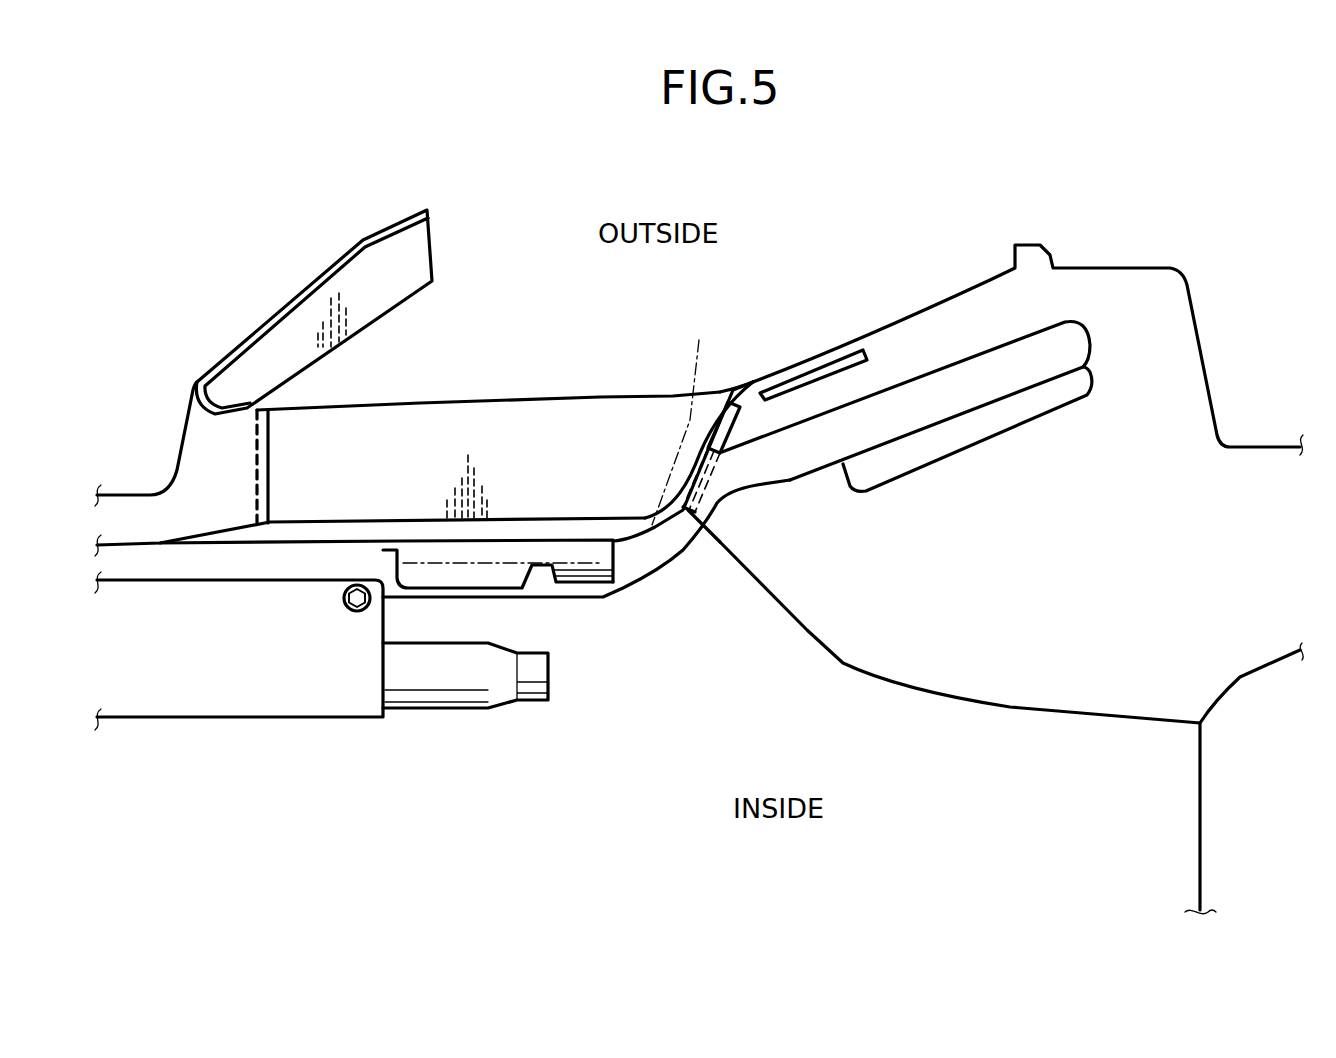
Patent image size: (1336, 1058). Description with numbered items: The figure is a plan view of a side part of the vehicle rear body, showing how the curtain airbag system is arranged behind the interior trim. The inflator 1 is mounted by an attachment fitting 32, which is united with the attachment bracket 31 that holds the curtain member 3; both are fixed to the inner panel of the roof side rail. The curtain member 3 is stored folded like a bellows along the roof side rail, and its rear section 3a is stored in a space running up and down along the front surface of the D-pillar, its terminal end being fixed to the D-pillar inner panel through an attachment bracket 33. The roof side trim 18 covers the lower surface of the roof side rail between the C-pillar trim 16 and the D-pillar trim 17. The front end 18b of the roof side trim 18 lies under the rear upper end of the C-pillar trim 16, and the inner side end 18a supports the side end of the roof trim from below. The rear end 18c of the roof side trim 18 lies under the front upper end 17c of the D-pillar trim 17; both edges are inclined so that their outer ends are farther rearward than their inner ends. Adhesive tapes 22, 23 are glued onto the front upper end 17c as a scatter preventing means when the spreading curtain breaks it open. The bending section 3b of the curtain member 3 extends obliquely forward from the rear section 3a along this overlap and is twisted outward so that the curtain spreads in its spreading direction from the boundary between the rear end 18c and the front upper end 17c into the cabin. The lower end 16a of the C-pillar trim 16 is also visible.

The inflator 1 is at (425, 698).
The curtain member 3 is at (680, 572).
The rear section of the curtain member 3a is at (998, 385).
The bending section of the curtain member 3b is at (680, 545).
The C-pillar trim 16 is at (403, 263).
The lower end of door trim 16a is at (265, 457).
The D-pillar trim 17 is at (832, 603).
The front upper end of the D-pillar trim 17c is at (720, 413).
The roof side trim 18 is at (563, 398).
The inner side end of the roof side trim 18a is at (537, 497).
The front end of the roof side trim 18b is at (253, 492).
The rear end of the roof side trim 18c is at (763, 377).
The adhesive tape 22 is at (712, 430).
The adhesive tape 23 is at (818, 358).
The attachment bracket 31 is at (323, 553).
The attachment fitting 32 is at (313, 698).
The attachment bracket 33 is at (955, 443).